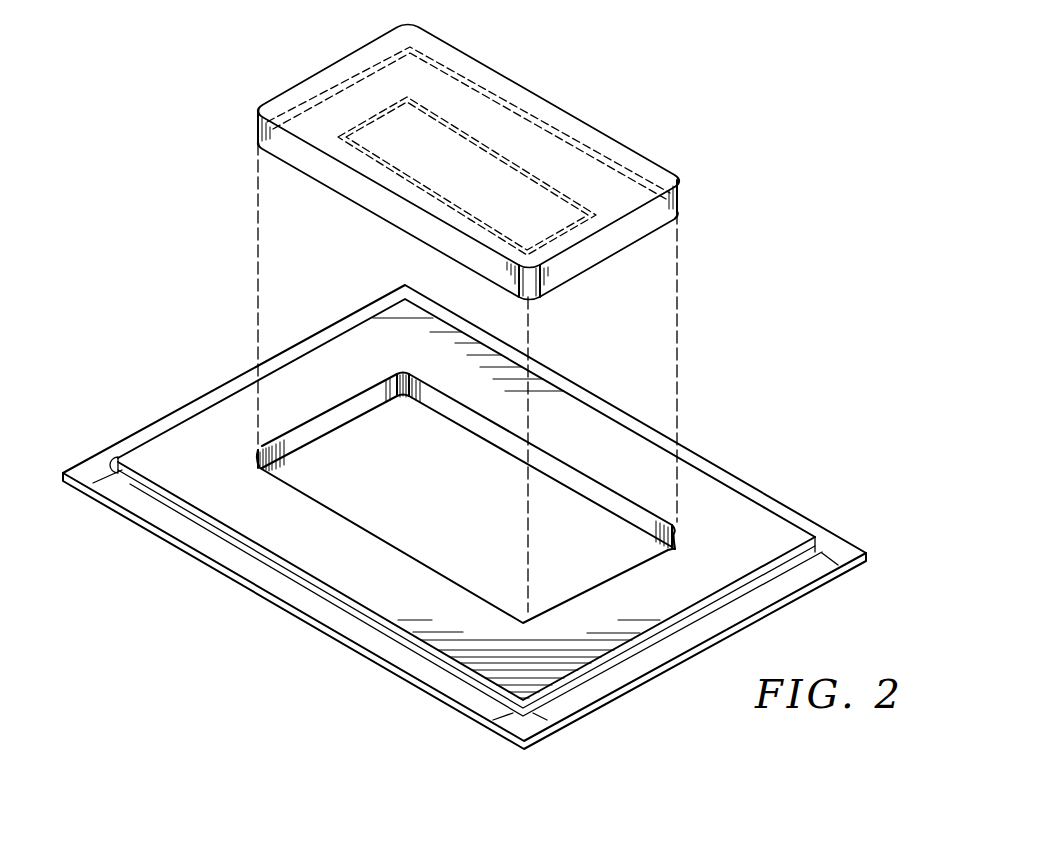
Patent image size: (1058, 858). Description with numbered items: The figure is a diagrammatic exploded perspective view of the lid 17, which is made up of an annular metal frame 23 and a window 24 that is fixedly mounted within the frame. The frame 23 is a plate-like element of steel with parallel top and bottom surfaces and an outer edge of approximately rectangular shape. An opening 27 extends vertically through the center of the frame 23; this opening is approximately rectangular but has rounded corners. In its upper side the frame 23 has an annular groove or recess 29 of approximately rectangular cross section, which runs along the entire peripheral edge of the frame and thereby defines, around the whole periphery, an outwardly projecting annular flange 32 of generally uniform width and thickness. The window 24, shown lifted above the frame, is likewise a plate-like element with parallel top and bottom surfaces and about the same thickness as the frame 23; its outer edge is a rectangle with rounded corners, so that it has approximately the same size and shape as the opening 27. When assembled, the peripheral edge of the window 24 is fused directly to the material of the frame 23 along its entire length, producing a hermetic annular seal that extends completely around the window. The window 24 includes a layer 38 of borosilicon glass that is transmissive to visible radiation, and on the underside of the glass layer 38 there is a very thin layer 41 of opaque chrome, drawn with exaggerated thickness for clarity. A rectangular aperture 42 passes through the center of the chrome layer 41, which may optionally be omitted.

The lid 17 is at (742, 148).
The frame 23 is at (213, 410).
The window 24 is at (547, 96).
The opening 27 is at (497, 444).
The annular groove or recess 29 is at (110, 466).
The annular flange 32 is at (322, 631).
The glass layer 38 is at (597, 247).
The chrome layer 41 is at (397, 226).
The aperture 42 is at (493, 158).